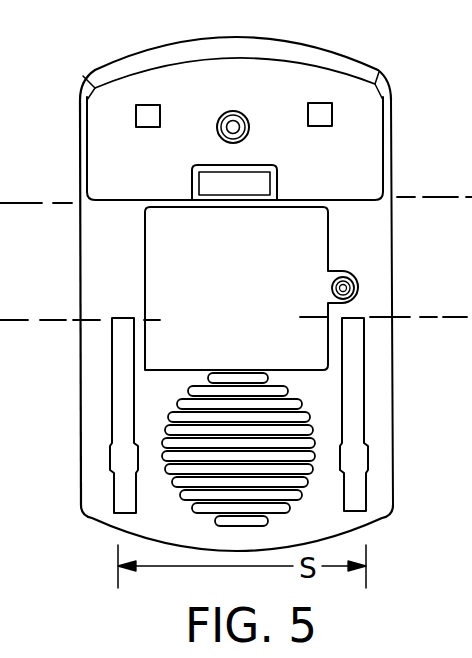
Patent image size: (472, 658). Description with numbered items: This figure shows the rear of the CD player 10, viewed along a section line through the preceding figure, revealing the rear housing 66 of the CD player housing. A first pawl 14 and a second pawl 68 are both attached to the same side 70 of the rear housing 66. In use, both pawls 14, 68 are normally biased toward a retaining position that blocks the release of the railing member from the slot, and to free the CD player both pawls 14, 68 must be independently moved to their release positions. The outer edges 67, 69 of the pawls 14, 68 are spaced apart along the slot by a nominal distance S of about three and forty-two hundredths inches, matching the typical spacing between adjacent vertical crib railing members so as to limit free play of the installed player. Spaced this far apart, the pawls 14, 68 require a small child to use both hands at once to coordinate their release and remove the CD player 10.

The CD player 10 is at (135, 42).
The first pawl 14 is at (121, 352).
The rear housing 66 is at (92, 225).
The outer edge 67 is at (112, 406).
The second pawl 68 is at (356, 365).
The outer edge 69 is at (365, 407).
The side 70 is at (98, 492).